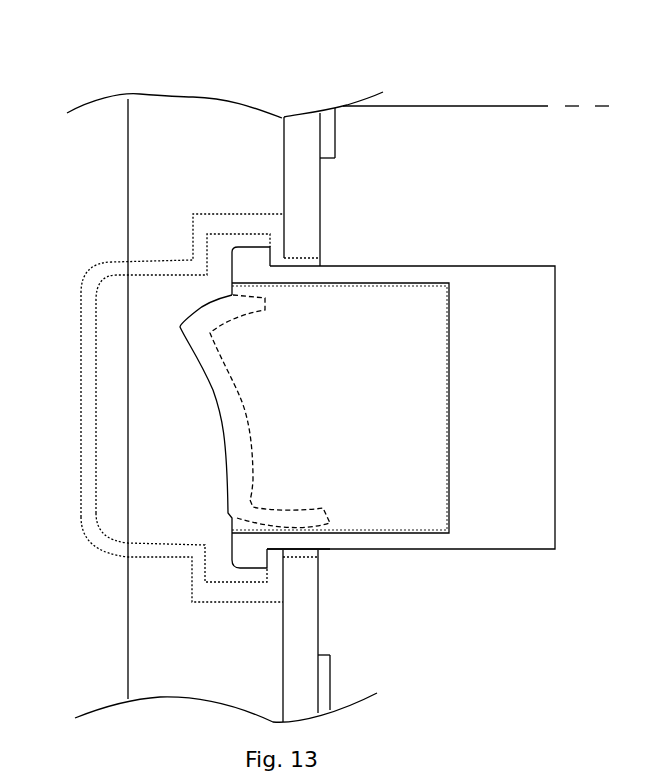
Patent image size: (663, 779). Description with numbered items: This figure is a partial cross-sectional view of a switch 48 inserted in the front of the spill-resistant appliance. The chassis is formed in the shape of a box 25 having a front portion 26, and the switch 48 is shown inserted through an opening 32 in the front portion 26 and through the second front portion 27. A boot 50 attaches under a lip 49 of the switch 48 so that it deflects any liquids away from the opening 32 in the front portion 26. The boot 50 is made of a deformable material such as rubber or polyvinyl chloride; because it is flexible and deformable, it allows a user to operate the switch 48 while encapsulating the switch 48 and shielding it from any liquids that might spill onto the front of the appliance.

The box 25 is at (439, 126).
The front portion 26 is at (528, 92).
The second front portion 27 is at (328, 152).
The opening 32 is at (307, 555).
The switch 48 is at (362, 357).
The lip 49 is at (253, 262).
The boot 50 is at (83, 360).